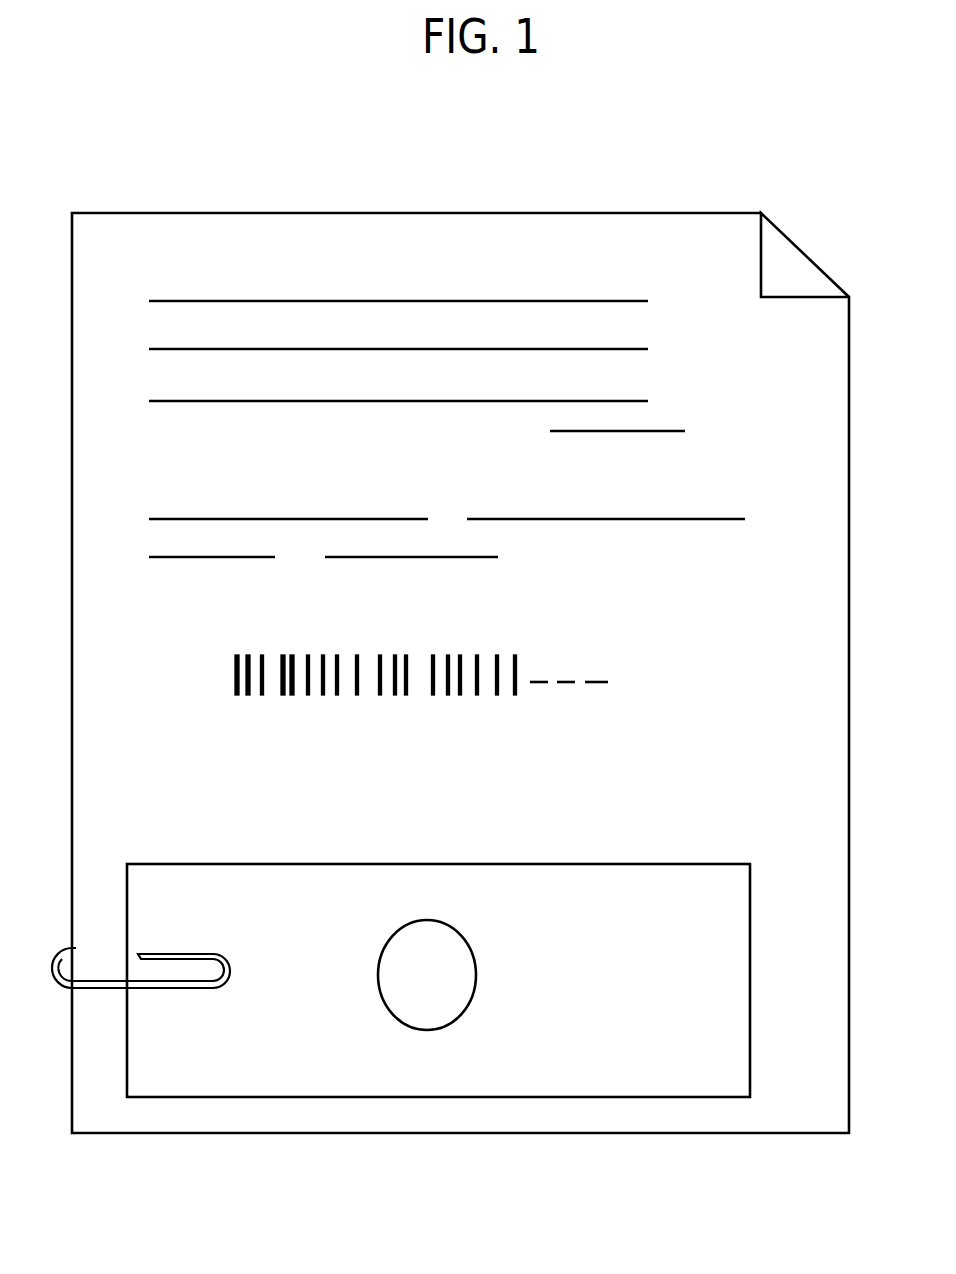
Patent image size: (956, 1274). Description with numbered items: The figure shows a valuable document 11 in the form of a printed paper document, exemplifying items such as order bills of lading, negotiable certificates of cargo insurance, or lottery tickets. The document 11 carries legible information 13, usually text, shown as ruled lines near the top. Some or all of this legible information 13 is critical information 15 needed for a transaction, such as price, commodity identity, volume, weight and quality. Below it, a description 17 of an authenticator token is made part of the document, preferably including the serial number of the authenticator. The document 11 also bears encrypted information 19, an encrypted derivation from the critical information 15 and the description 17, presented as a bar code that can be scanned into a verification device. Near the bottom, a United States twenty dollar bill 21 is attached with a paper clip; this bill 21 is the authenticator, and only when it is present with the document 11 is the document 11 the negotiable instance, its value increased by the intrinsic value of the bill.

The valuable document 11 is at (786, 247).
The legible information 13 is at (480, 301).
The critical legible information 15 is at (348, 519).
The description of authenticator token 17 is at (198, 602).
The encrypted information 19 is at (235, 687).
The twenty dollar bill 21 is at (486, 864).